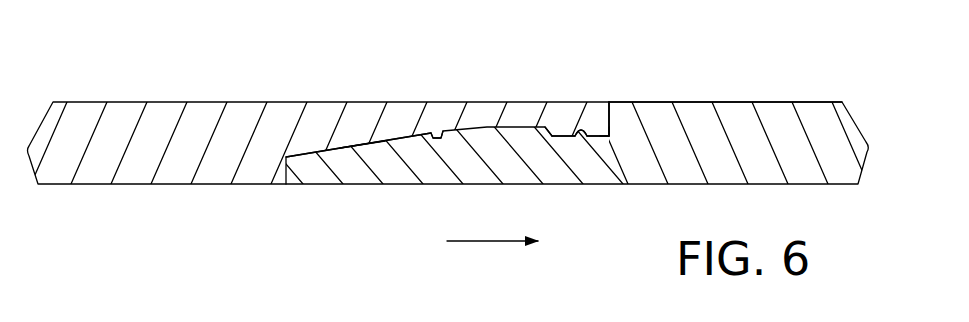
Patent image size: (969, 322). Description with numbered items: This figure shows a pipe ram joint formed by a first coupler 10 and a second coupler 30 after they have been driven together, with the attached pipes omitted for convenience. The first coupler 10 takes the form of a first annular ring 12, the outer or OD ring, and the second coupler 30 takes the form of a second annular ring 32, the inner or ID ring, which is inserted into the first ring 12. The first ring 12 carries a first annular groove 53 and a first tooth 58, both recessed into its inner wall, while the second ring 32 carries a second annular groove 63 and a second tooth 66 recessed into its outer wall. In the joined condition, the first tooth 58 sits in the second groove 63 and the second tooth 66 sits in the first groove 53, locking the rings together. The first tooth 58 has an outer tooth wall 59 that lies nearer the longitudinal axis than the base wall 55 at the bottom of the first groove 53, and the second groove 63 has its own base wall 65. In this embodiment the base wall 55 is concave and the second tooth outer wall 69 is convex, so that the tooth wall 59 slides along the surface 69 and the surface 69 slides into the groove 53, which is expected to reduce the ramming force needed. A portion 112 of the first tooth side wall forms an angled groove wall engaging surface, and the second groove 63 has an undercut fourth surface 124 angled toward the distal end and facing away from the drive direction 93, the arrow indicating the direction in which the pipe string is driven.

The first coupler 10 is at (248, 90).
The first annular ring 12 is at (288, 101).
The second coupler 30 is at (752, 75).
The second annular ring 32 is at (698, 101).
The first annular groove 53 is at (438, 131).
The base wall 55 is at (362, 145).
The first tooth 58 is at (581, 127).
The outer tooth wall 59 is at (568, 136).
The second annular groove 63 is at (584, 134).
The base wall 65 is at (557, 128).
The second tooth 66 is at (412, 147).
The second tooth outer wall 69 is at (376, 143).
The drive direction 93 is at (493, 242).
The first tooth side wall groove wall engaging surface 112 is at (610, 113).
The fourth surface 124 is at (601, 124).